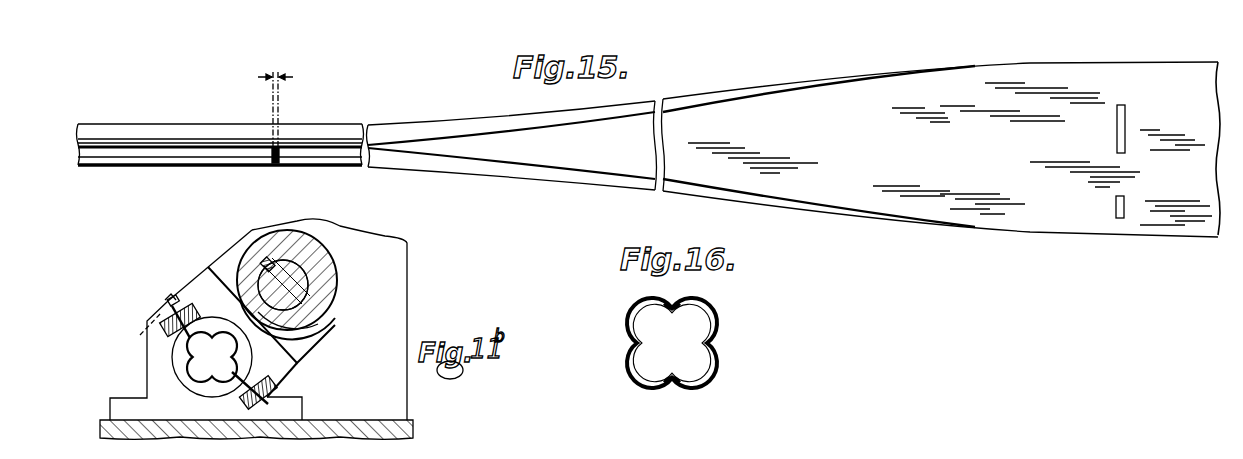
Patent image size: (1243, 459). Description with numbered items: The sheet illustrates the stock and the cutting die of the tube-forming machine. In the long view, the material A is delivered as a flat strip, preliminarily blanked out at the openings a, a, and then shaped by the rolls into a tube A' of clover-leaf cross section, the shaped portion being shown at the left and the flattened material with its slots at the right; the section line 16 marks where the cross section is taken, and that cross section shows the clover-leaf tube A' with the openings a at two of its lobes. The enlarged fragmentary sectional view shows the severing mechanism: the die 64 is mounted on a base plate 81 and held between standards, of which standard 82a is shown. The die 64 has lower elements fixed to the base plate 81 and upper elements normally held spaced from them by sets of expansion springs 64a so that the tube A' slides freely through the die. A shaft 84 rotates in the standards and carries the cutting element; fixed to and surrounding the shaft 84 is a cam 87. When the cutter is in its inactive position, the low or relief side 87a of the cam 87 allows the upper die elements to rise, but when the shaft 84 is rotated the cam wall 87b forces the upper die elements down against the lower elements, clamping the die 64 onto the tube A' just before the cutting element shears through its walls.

In FIG. 15, the section line 16 is at (288, 188).
In FIG. 15, the tube A' is at (220, 128).
In FIG. 16, the tube A' is at (694, 343).
In FIG. 15, the material A is at (941, 167).
In FIG. 15, the openings a is at (1100, 210).
In FIG. 16, the openings a is at (653, 400).
In FIG. 11B, the die 64 is at (205, 285).
In FIG. 11B, the expansion springs 64a is at (173, 297).
In FIG. 11B, the shaft 84 is at (293, 277).
In FIG. 11B, the cam 87 is at (332, 287).
In FIG. 11B, the low or relief side of the cam 87a is at (318, 322).
In FIG. 11B, the cam wall 87b is at (325, 313).
In FIG. 11B, the standard 82a is at (408, 292).
In FIG. 11B, the base plate 81 is at (414, 422).